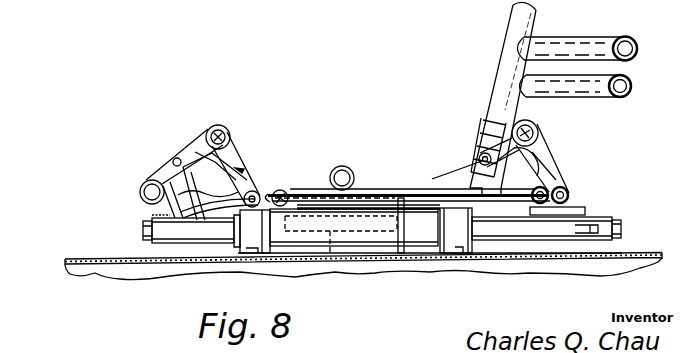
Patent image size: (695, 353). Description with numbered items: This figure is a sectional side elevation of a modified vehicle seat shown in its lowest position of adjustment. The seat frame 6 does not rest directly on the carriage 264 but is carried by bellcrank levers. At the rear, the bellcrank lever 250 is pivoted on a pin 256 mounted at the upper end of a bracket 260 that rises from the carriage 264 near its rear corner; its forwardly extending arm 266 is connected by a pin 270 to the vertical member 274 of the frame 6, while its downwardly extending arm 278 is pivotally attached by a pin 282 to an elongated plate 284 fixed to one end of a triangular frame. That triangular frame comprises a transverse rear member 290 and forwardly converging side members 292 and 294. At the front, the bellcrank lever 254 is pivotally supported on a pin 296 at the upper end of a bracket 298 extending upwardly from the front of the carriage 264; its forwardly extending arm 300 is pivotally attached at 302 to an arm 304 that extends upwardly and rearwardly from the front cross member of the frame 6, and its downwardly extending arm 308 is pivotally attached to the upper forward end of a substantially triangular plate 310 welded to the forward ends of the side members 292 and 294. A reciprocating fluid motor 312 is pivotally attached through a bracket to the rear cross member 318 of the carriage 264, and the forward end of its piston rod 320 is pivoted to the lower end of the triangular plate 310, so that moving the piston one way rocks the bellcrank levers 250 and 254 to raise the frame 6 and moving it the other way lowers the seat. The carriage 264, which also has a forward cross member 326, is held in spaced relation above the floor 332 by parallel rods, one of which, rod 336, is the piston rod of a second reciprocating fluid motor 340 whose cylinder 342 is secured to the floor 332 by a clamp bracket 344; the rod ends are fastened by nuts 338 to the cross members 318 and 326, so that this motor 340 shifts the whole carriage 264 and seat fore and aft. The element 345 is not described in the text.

The frame 6 is at (506, 31).
The vertical member 274 is at (503, 78).
The pin 256 is at (535, 125).
The bracket 260 is at (541, 142).
The bellcrank lever 250 is at (548, 158).
The downwardly extending arm 278 is at (545, 182).
The transverse rear member 290 is at (548, 194).
The pin 282 is at (568, 197).
The elongated plate 284 is at (566, 214).
The carriage 264 is at (152, 217).
The rear cross member 318 is at (612, 251).
The reciprocating fluid motor 312 is at (512, 213).
The block 345 is at (452, 252).
The cylinder 342 is at (378, 252).
The piston rod 320 is at (336, 253).
The reciprocating fluid motor 340 is at (300, 254).
The clamp bracket 344 is at (242, 252).
The rod 336 is at (188, 238).
The forward cross member 326 is at (146, 243).
The nut 338 is at (145, 231).
The floor 332 is at (72, 258).
The arm 304 is at (163, 182).
The pivotal attachment 302 is at (173, 162).
The bellcrank lever 254 is at (187, 146).
The forwardly extending arm 300 is at (198, 140).
The pin 296 is at (211, 127).
The bracket 298 is at (240, 172).
The downwardly extending arm 308 is at (262, 190).
The triangular plate 310 is at (286, 190).
The side member 294 is at (372, 200).
The side member 292 is at (426, 195).
The forwardly extending arm 266 is at (503, 143).
The pin 270 is at (481, 155).